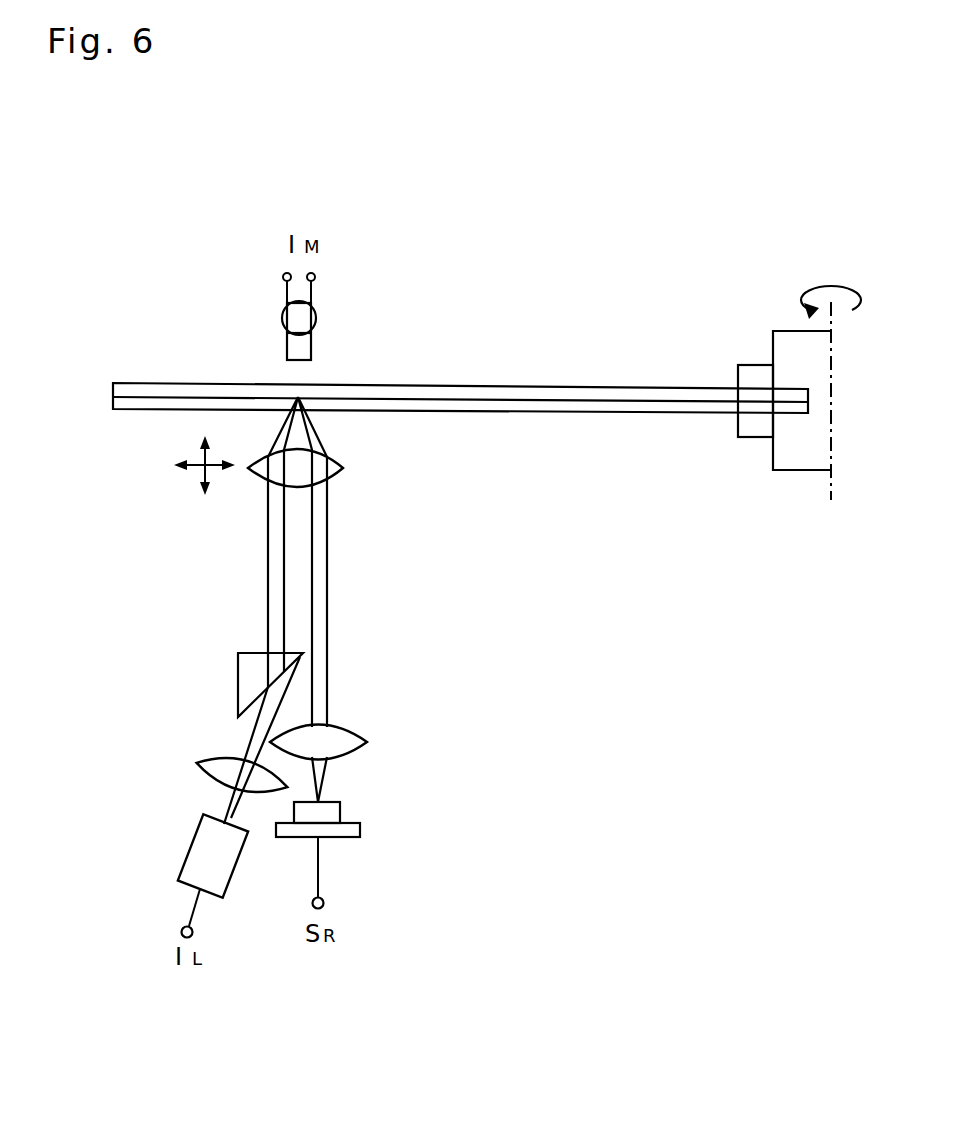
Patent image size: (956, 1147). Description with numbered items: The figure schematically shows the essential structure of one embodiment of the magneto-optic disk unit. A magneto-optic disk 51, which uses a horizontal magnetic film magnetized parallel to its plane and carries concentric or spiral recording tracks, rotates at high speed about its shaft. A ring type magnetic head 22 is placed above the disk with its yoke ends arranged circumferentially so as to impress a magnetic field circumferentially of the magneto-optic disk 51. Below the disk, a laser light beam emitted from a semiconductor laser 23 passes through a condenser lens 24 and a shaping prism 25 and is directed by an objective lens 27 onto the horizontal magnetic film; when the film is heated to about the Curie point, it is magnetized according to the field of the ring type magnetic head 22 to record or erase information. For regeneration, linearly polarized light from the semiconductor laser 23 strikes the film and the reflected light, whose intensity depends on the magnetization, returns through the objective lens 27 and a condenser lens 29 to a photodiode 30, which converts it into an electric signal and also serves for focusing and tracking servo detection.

The magneto-optic disk 51 is at (159, 383).
The ring type magnetic head 22 is at (282, 328).
The objective lens 27 is at (342, 463).
The shaping prism 25 is at (238, 678).
The condenser lens 24 is at (221, 752).
The semiconductor laser 23 is at (193, 845).
The condenser lens 29 is at (362, 748).
The photodiode 30 is at (360, 832).